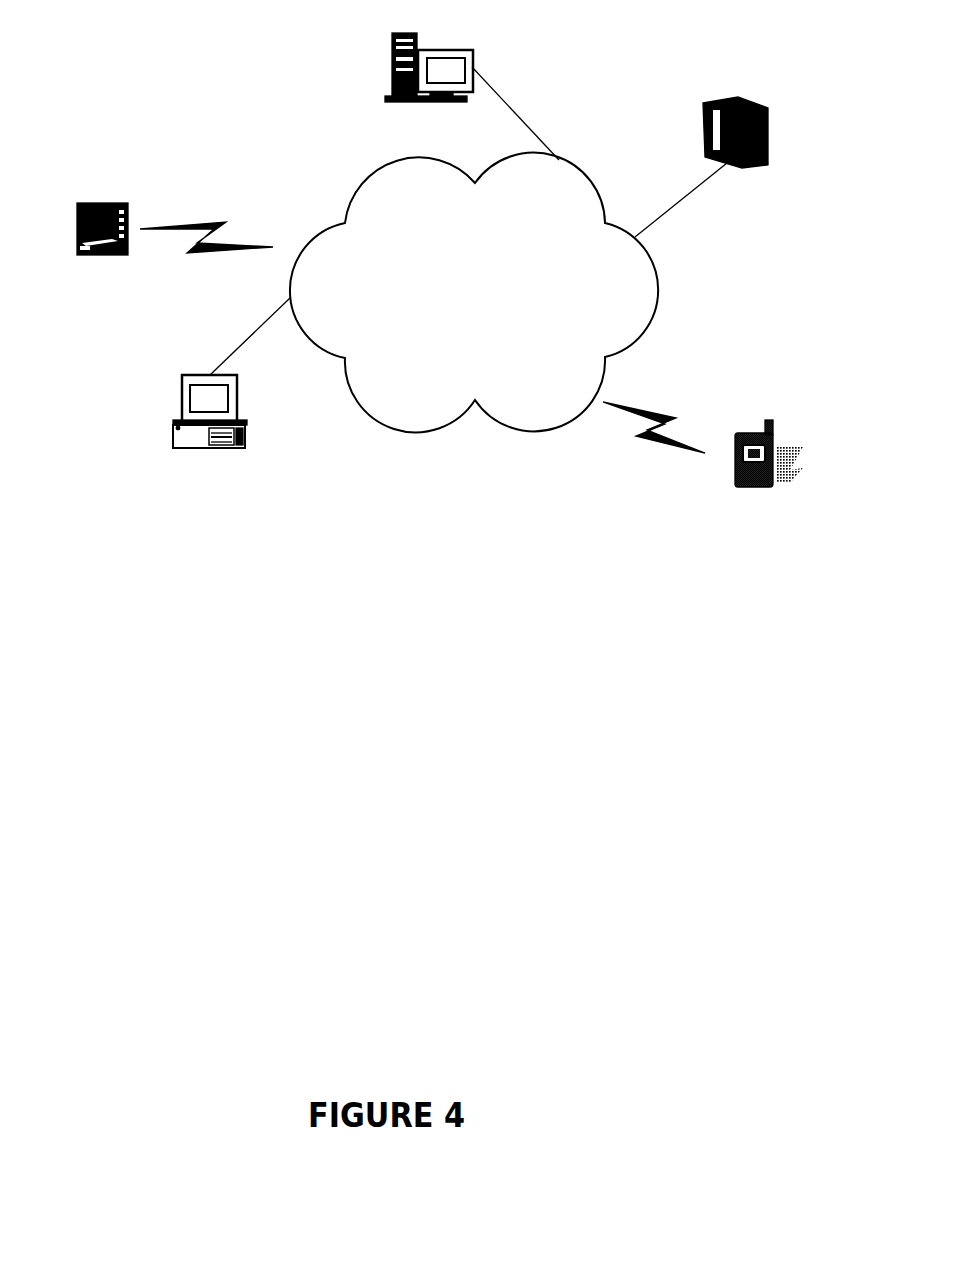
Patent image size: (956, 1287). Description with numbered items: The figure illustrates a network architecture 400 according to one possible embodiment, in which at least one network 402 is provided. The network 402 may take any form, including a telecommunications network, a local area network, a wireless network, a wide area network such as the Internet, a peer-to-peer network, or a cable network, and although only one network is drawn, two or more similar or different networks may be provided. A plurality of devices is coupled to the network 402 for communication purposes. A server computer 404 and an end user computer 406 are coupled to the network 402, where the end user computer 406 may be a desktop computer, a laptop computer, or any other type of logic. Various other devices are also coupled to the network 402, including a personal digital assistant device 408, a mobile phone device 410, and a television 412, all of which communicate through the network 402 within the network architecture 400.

The network architecture 400 is at (388, 710).
The network 402 is at (528, 430).
The server computer 404 is at (390, 66).
The end user computer 406 is at (175, 427).
The personal digital assistant (PDA) device 408 is at (100, 203).
The mobile phone device 410 is at (733, 433).
The television 412 is at (703, 99).